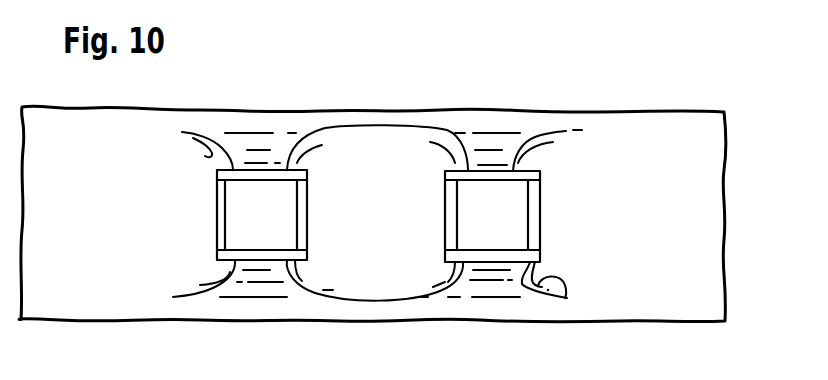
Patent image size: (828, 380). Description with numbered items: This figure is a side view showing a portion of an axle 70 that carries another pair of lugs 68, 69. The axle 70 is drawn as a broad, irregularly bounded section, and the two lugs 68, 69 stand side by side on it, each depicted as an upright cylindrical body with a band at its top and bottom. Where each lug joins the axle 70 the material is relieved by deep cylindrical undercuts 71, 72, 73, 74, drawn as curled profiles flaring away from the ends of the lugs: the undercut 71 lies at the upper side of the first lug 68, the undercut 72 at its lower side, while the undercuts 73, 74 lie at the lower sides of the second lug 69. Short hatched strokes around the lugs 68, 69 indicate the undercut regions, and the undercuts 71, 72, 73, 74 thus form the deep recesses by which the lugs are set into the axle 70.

The axle 70 is at (628, 150).
The lug 68 is at (262, 237).
The lug 69 is at (495, 237).
The cylindrical undercut 71 is at (203, 145).
The cylindrical undercut 72 is at (302, 279).
The cylindrical undercut 73 is at (452, 275).
The cylindrical undercut 74 is at (563, 298).